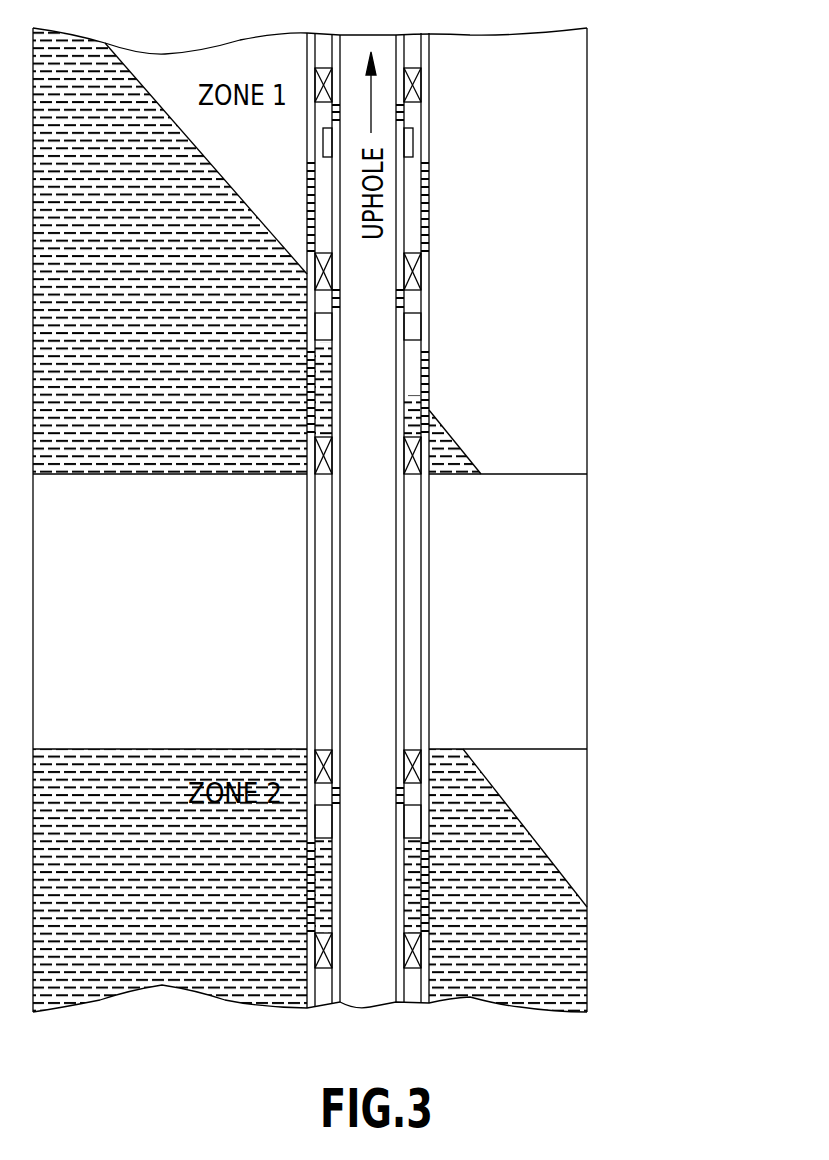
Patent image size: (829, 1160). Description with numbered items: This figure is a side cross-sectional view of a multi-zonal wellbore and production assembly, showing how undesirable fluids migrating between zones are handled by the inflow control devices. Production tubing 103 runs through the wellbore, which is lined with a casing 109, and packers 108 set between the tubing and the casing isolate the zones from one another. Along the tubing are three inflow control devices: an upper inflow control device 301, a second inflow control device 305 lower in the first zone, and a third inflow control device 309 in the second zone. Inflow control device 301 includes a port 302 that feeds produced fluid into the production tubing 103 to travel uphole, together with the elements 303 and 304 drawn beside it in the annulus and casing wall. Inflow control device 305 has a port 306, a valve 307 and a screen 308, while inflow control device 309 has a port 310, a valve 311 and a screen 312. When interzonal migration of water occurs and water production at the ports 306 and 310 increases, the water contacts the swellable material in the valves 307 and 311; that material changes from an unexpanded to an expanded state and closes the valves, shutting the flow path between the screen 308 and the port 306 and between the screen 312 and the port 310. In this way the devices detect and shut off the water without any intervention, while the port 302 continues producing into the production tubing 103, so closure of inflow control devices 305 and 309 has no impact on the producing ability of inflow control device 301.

The production tubing 103 is at (405, 510).
The casing 109 is at (430, 557).
The packer 108 is at (427, 767).
The inflow control device 301 is at (522, 178).
The port 302 is at (405, 114).
The sensor 303 is at (413, 142).
The casing perforations 304 is at (428, 182).
The inflow control device 305 is at (525, 361).
The port 306 is at (405, 299).
The valve 307 is at (421, 332).
The screen 308 is at (430, 368).
The inflow control device 309 is at (526, 859).
The port 310 is at (405, 795).
The valve 311 is at (408, 828).
The screen 312 is at (430, 862).